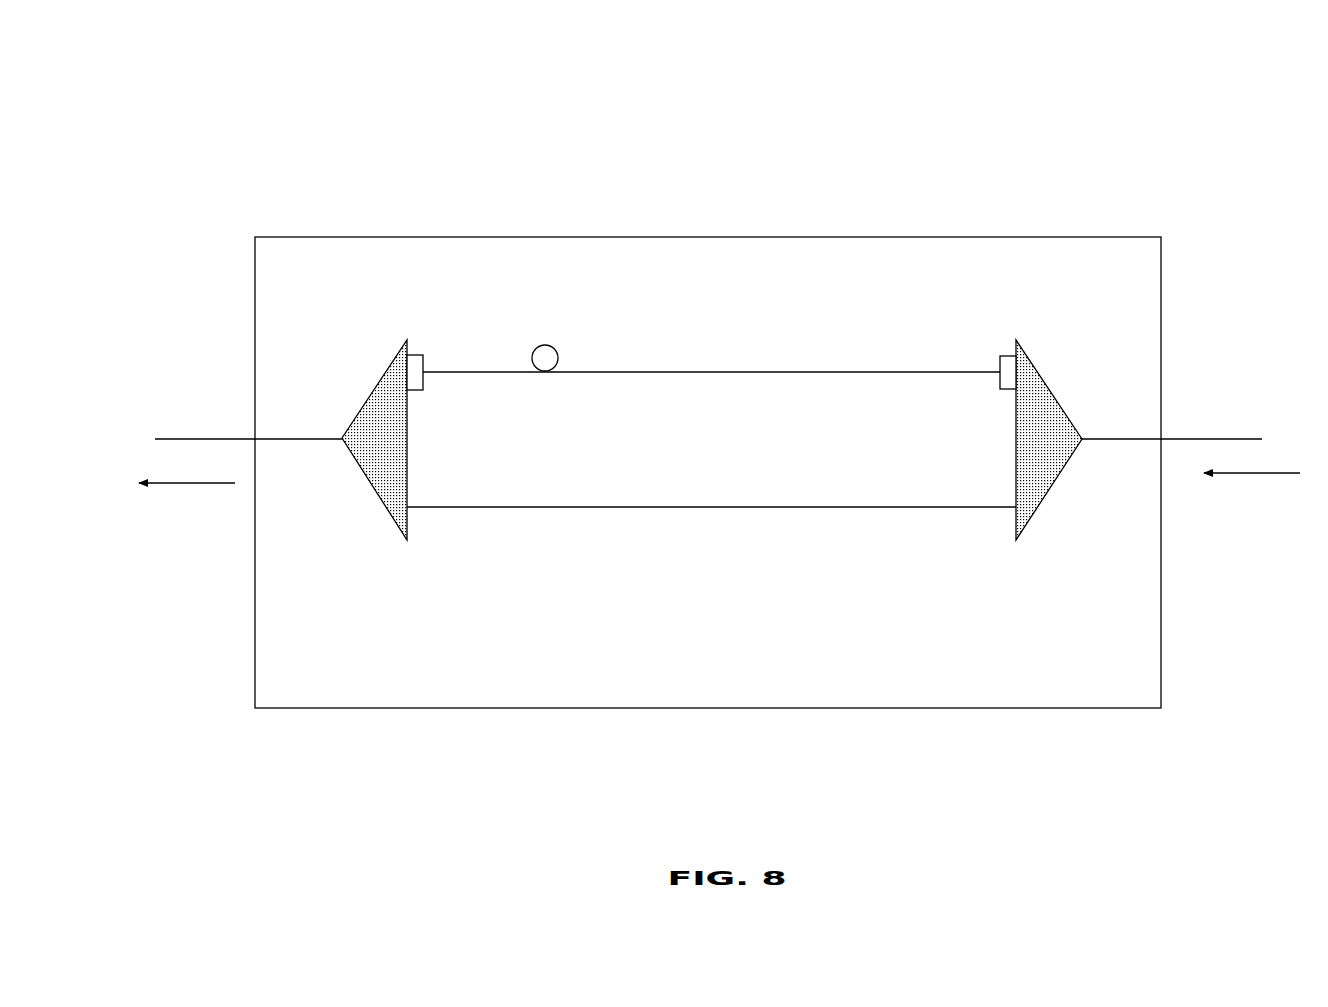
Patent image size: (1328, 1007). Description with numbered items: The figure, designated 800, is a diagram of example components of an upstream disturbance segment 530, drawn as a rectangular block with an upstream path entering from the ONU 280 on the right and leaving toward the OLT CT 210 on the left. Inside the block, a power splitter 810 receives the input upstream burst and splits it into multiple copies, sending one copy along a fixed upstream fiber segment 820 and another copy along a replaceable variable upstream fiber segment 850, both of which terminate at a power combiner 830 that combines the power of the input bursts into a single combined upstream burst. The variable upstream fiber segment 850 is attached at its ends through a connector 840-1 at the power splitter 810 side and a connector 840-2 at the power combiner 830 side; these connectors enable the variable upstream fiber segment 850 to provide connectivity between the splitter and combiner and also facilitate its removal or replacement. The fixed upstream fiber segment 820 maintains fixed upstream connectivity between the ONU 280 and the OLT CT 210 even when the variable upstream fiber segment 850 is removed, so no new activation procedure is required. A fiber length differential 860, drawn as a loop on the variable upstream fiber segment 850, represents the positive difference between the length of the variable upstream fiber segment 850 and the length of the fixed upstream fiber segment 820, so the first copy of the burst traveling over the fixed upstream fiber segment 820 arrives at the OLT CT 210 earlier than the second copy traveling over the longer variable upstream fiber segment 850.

The example components of an upstream disturbance segment 800 is at (233, 33).
The upstream disturbance segment 530 is at (389, 237).
The OLT CT 210 is at (170, 547).
The ONU 280 is at (1235, 541).
The power combiner 830 is at (388, 513).
The power splitter 810 is at (1026, 528).
The connector 840-2 is at (413, 353).
The connector 840-1 is at (1008, 353).
The variable upstream fiber segment 850 is at (725, 370).
The fixed upstream fiber segment 820 is at (724, 509).
The fiber length differential 860 is at (553, 347).